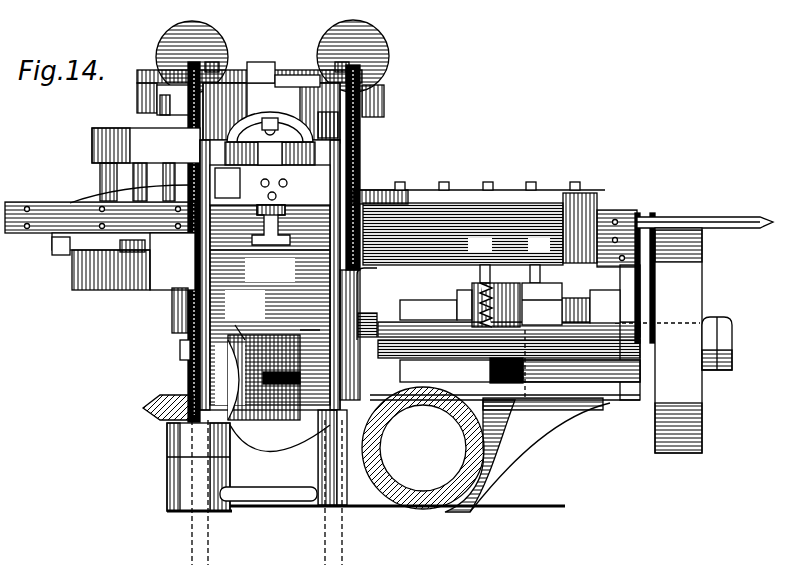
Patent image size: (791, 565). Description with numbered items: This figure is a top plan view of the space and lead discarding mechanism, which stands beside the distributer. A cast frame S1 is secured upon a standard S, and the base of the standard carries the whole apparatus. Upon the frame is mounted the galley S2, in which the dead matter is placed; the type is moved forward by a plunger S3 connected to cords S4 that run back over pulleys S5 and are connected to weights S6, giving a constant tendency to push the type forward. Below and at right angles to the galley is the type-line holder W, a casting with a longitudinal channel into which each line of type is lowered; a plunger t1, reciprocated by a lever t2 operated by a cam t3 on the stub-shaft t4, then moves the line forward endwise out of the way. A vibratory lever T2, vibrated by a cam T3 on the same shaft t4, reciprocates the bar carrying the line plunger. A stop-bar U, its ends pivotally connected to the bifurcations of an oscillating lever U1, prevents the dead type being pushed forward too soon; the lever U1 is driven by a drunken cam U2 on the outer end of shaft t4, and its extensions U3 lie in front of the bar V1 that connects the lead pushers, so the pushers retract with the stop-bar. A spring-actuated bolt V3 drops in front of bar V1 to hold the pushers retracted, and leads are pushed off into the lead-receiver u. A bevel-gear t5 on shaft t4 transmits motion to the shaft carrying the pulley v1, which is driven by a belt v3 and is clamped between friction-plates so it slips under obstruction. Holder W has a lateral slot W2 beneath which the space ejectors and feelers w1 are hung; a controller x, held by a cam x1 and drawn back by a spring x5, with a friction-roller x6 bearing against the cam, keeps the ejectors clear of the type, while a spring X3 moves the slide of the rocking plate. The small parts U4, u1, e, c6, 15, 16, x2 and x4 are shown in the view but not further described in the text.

The weights S6 is at (205, 36).
The pulleys S5 is at (216, 74).
The standard S is at (420, 517).
The stop-bar U is at (249, 118).
The bearing block U4 is at (162, 99).
The oscillating lever U1 is at (284, 88).
The drunken cam U2 is at (331, 125).
The extensions of lever U' U3 is at (227, 182).
The cam T3 is at (135, 164).
The vibratory lever T2 is at (150, 203).
The type-line holder W is at (60, 205).
The plunger t1 is at (58, 237).
The lever t2 is at (157, 261).
The cam t3 is at (100, 290).
The stub-shaft t4 is at (178, 385).
The bevel-gear t5 is at (258, 422).
The galley S2 is at (180, 347).
The lead-receiver u is at (270, 275).
The pedestal u' u1 is at (316, 228).
The bar V1 is at (270, 127).
The spring-actuated bolt V3 is at (270, 153).
The holes e is at (283, 189).
The part c6 is at (280, 322).
The cast frame S1 is at (658, 283).
The plunger S3 is at (423, 448).
The cords S4 is at (352, 200).
The bolts 15 is at (497, 205).
The lateral slot W2 is at (580, 192).
The space ejectors and feelers w1 is at (582, 238).
The pulley v1 is at (744, 217).
The belt v3 is at (702, 436).
The controller x is at (509, 342).
The cam x1 is at (490, 366).
The part x2 is at (428, 324).
The part x4 is at (605, 319).
The spring x5 is at (590, 312).
The friction-roller x6 is at (520, 298).
The spring X3 is at (590, 288).
The part 16 is at (505, 448).
The element base is at (366, 417).